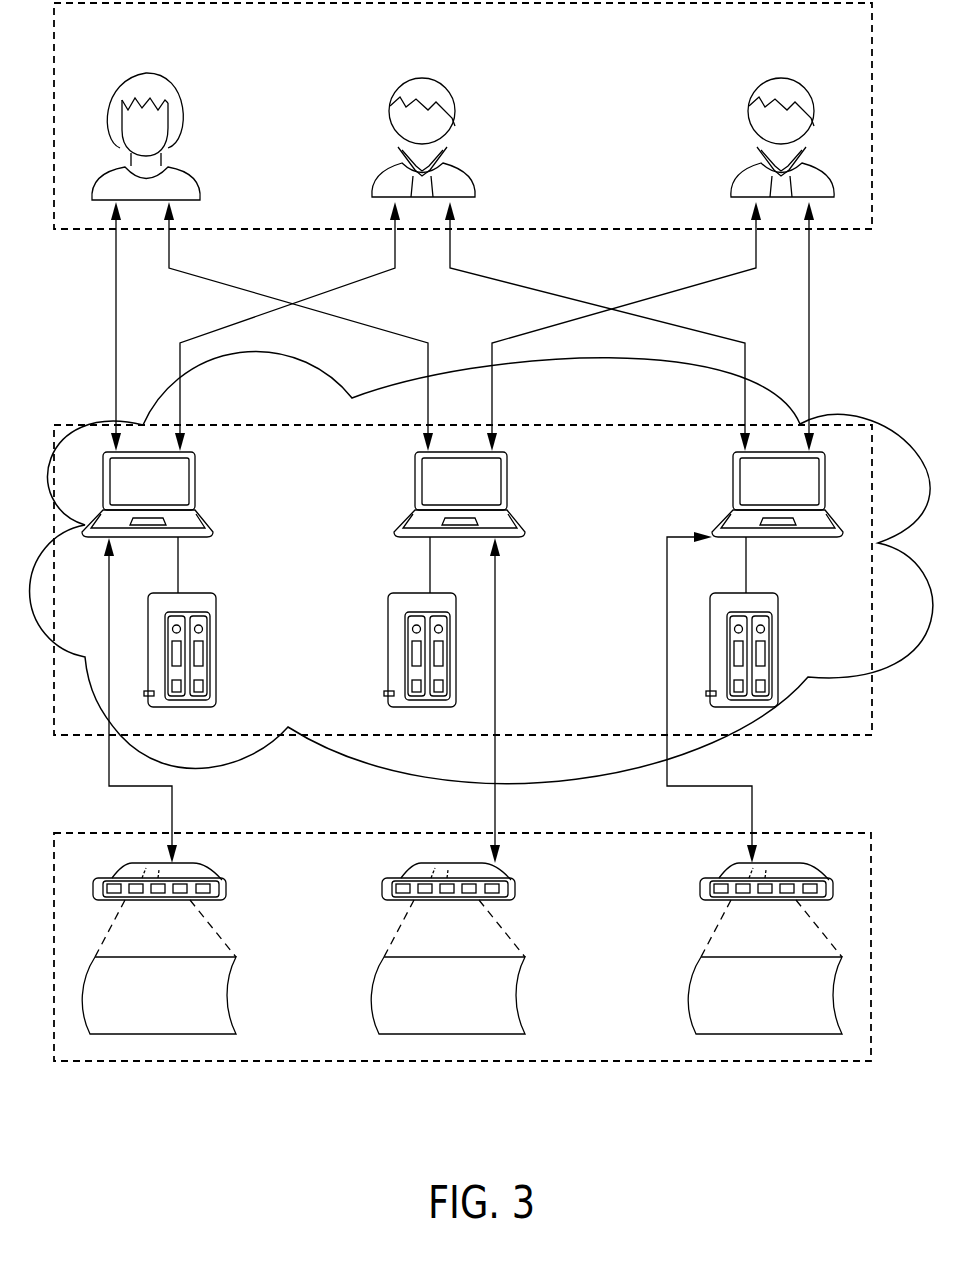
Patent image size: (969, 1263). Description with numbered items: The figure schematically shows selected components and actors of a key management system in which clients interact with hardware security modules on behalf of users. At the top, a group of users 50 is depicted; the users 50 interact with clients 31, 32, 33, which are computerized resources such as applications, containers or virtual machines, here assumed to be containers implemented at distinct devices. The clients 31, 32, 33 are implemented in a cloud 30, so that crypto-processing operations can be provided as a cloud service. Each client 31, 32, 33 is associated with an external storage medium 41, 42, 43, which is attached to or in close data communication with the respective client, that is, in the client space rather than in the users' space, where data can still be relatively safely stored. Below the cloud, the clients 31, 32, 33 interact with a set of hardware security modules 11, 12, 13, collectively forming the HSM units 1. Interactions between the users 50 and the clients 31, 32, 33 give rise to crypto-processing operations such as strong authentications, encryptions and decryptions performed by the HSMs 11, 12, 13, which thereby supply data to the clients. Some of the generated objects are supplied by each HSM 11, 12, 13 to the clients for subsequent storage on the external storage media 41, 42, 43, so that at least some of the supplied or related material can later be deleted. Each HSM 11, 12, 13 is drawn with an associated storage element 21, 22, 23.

The HSM units 1 is at (605, 1063).
The hardware security module 11 is at (210, 878).
The hardware security module 12 is at (512, 891).
The hardware security module 13 is at (705, 892).
The storage of HSM unit 21 is at (218, 1003).
The storage of HSM unit 22 is at (505, 988).
The storage of HSM unit 23 is at (700, 1008).
The cloud 30 is at (884, 678).
The client 31 is at (205, 521).
The client 32 is at (518, 521).
The client 33 is at (735, 480).
The external storage medium 41 is at (215, 651).
The external storage medium 42 is at (388, 641).
The external storage medium 43 is at (778, 605).
The users 50 is at (851, 231).